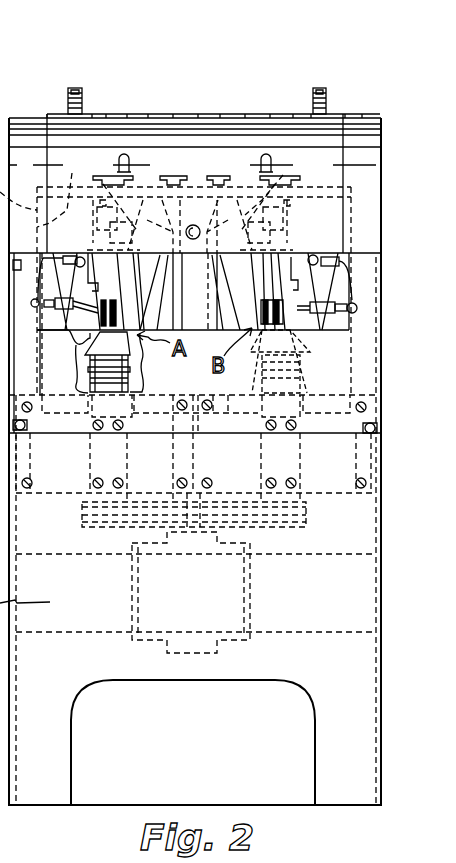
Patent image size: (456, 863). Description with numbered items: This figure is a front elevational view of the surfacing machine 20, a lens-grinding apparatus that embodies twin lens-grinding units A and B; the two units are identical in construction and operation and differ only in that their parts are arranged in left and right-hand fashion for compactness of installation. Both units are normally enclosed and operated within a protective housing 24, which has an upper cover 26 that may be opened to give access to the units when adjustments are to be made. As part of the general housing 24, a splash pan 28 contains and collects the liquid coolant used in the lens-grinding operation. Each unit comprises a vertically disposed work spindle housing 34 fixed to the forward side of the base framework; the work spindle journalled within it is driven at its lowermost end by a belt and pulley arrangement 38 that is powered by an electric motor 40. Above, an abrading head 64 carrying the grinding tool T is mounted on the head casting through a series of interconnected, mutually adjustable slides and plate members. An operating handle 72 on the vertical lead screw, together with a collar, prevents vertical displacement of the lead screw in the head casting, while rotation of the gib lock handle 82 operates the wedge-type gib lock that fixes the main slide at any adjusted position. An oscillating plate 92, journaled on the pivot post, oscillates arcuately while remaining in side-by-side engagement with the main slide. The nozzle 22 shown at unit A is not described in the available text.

The surfacing machine 20 is at (287, 82).
The dispensing nozzle 22 is at (88, 370).
The protective housing 24 is at (371, 167).
The upper cover 26 is at (160, 132).
The splash pan 28 is at (230, 385).
The work spindle housing 34 is at (98, 452).
The belt and pulley arrangement 38 is at (163, 525).
The electric motor 40 is at (238, 637).
The abrading head 64 is at (138, 315).
The operating handle 72 is at (100, 156).
The gib lock handle 82 is at (170, 167).
The oscillating plate 92 is at (258, 310).